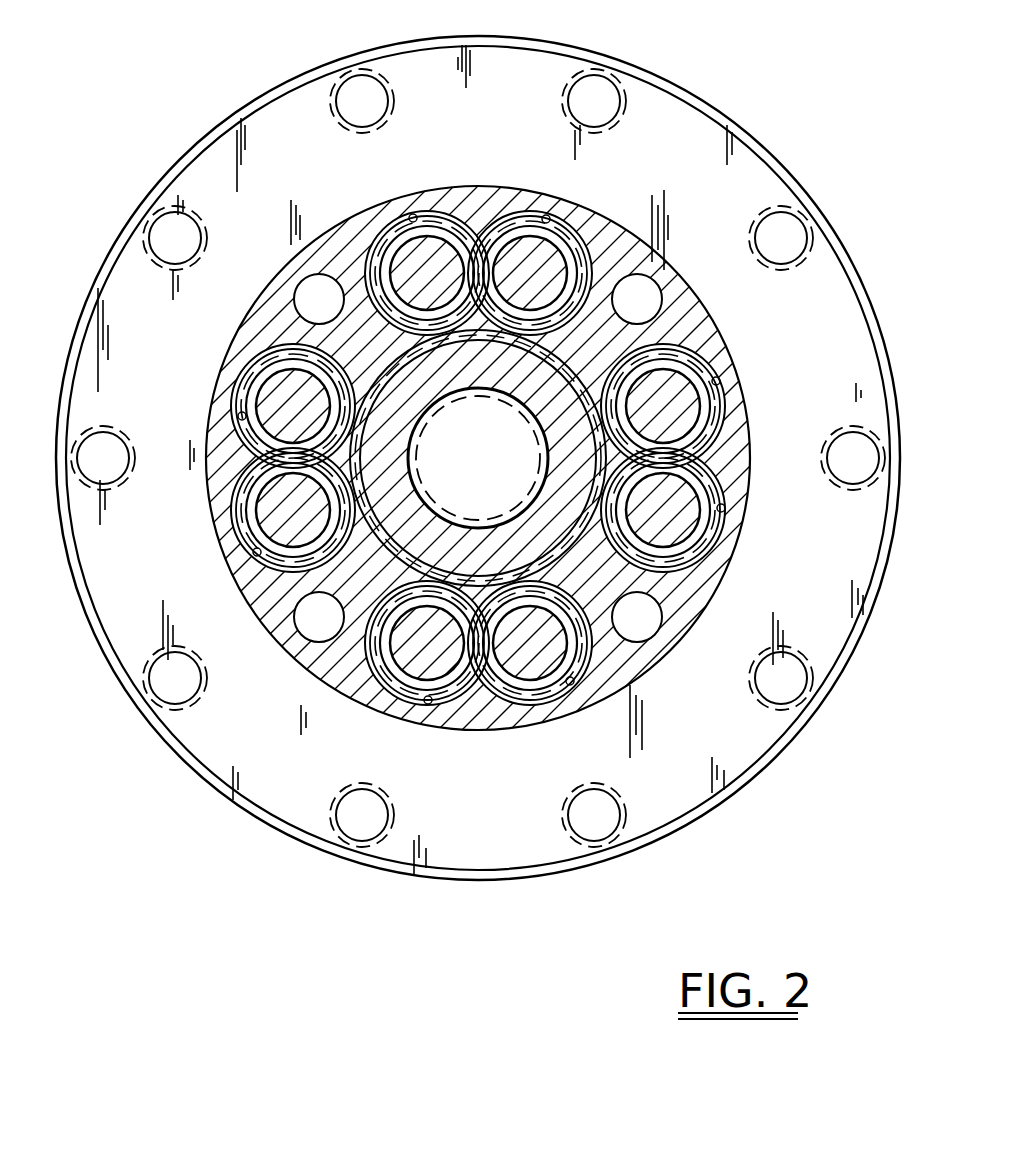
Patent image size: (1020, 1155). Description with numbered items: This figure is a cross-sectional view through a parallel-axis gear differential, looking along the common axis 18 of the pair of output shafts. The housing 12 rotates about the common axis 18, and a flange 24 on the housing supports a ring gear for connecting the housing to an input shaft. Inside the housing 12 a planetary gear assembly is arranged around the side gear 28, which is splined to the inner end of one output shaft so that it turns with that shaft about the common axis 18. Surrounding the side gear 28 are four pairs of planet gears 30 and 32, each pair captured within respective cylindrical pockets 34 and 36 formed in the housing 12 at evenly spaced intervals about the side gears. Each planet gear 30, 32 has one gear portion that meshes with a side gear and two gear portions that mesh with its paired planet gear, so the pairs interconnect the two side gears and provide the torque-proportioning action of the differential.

The housing 12 is at (680, 605).
The common axis 18 is at (478, 460).
The flange 24 is at (808, 324).
The side gear 28 is at (395, 491).
The planet gear 30 is at (400, 240).
The planet gear 32 is at (575, 233).
The cylindrical pocket 34 is at (413, 215).
The cylindrical pocket 36 is at (546, 216).